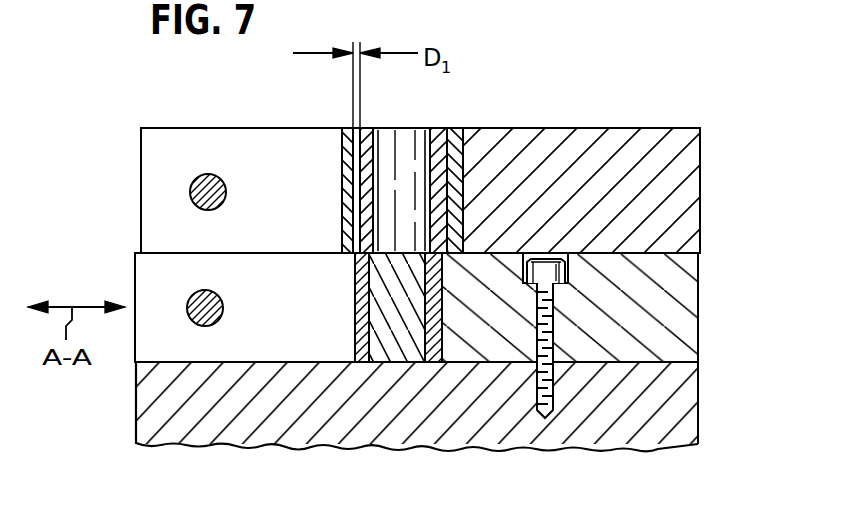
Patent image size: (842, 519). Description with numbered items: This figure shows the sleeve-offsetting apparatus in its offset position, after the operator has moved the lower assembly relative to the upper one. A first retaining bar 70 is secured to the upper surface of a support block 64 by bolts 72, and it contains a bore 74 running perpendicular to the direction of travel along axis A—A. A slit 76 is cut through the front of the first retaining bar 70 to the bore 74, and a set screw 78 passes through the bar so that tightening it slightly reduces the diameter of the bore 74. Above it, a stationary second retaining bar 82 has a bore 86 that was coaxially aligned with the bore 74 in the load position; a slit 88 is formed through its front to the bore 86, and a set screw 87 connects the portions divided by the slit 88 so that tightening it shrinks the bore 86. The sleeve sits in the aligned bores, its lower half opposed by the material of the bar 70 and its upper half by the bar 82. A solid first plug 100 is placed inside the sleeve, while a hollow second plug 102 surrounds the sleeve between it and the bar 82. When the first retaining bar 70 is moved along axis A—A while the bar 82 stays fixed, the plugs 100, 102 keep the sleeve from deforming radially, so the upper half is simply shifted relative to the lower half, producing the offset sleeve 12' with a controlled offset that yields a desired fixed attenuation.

The support block 64 is at (690, 411).
The first retaining bar 70 is at (690, 316).
The bolt 72 is at (551, 378).
The bore 74 is at (430, 364).
The slit 76 is at (148, 274).
The set screw 78 is at (212, 303).
The second retaining bar 82 is at (618, 136).
The bore 86 is at (452, 130).
The set screw 87 is at (213, 187).
The slit 88 is at (148, 156).
The first plug 100 is at (380, 298).
The second plug 102 is at (346, 130).
The offset sleeve 12' is at (324, 307).